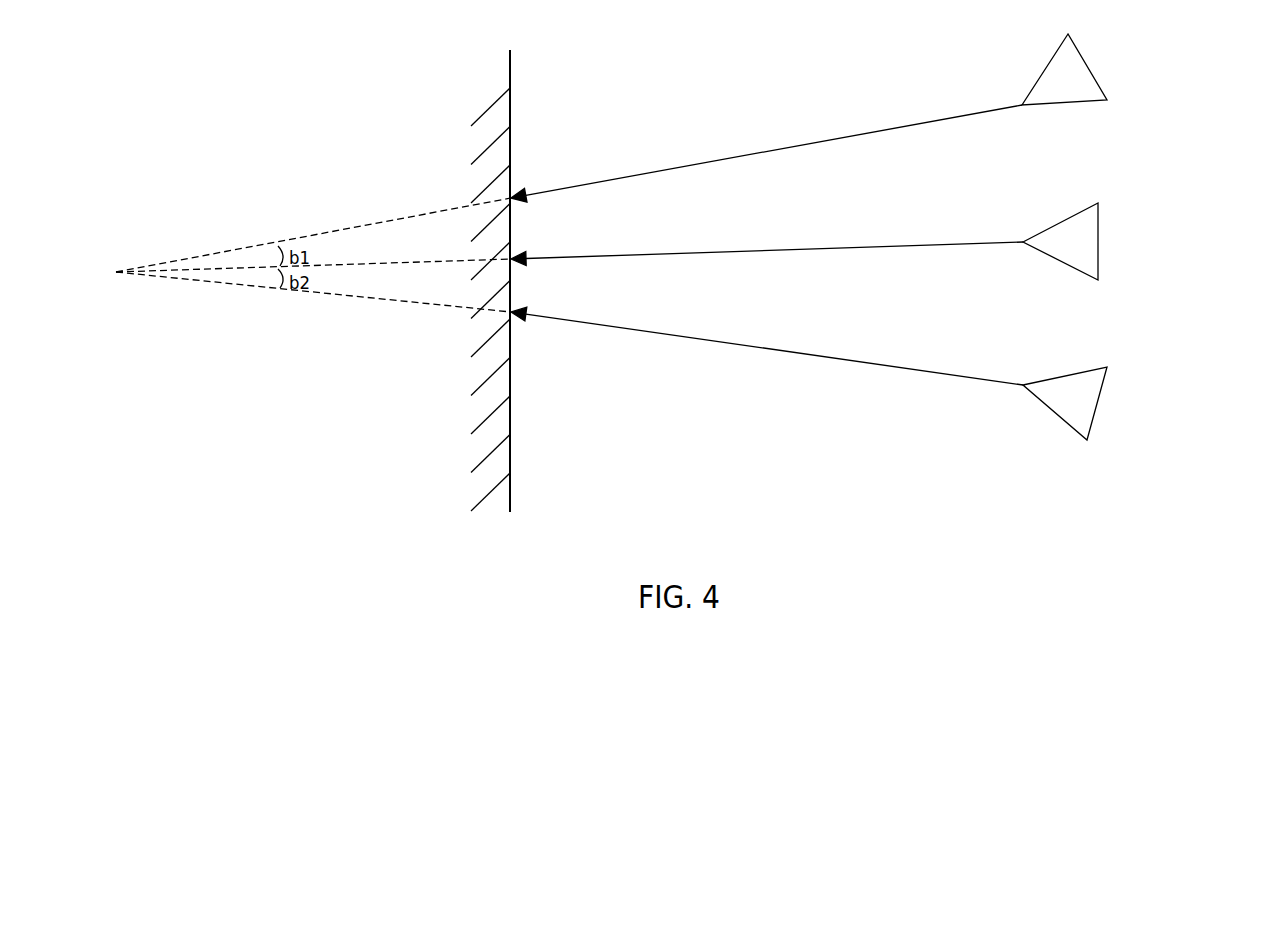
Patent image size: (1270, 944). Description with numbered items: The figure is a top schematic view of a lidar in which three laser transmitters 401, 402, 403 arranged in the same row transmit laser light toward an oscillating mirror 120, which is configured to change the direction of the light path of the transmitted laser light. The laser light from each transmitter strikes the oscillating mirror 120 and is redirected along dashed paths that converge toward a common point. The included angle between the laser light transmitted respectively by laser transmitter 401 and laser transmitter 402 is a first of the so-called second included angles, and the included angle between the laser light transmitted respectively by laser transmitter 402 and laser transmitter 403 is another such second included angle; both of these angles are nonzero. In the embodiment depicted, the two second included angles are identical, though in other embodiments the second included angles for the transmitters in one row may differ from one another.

The oscillating mirror 120 is at (510, 66).
The laser transmitter 401 is at (1087, 63).
The laser transmitter 402 is at (1098, 235).
The laser transmitter 403 is at (1099, 405).